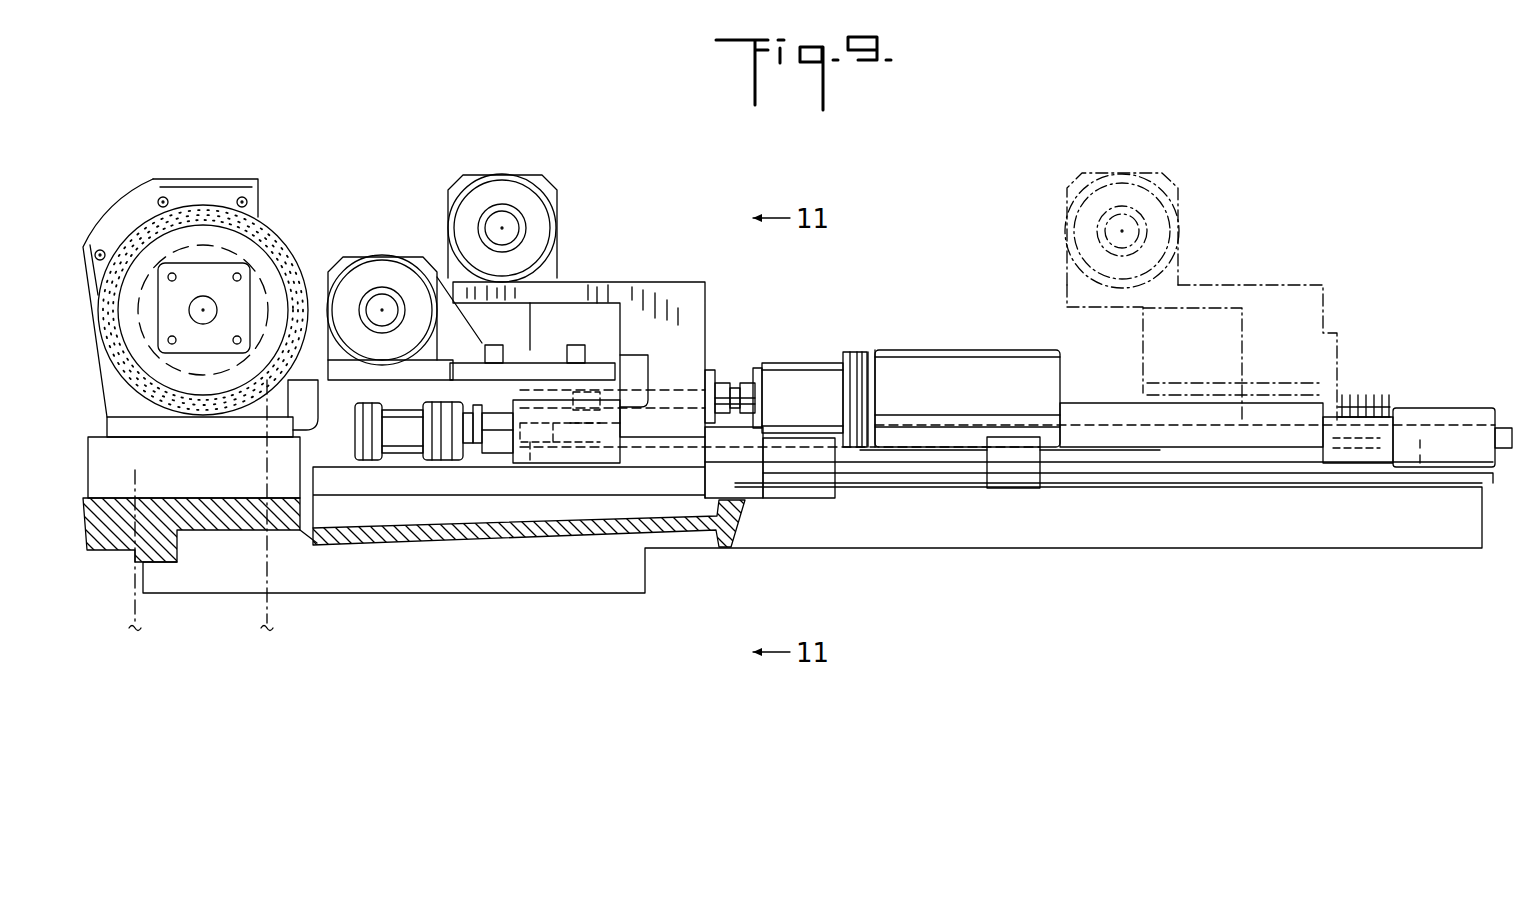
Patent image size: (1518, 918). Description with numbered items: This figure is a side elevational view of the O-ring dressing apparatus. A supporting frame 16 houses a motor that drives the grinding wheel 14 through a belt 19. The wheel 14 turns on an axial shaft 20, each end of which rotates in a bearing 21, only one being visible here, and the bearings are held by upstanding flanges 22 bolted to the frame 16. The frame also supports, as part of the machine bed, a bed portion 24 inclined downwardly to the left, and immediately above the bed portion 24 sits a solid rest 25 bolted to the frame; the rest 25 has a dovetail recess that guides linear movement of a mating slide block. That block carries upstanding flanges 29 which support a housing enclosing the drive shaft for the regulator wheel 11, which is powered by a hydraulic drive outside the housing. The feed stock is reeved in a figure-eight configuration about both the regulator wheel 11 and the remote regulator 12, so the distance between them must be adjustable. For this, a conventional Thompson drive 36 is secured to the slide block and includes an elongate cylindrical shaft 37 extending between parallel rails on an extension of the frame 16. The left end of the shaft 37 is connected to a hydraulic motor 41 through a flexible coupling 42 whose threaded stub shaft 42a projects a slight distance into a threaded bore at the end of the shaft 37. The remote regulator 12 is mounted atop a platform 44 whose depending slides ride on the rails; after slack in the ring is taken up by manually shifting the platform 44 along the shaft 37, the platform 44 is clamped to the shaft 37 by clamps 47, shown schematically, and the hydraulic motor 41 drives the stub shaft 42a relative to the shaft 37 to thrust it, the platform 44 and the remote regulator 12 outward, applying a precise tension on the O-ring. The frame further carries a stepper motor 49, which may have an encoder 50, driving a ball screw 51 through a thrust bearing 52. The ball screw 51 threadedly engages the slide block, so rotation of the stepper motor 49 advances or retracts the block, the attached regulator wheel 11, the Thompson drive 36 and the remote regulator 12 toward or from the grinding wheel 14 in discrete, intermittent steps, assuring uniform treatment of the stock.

The regulator wheel 11 is at (368, 268).
The remote regulator 12 is at (555, 215).
The grinding wheel 14 is at (263, 237).
The supporting frame 16 is at (640, 595).
The belt 19 is at (267, 483).
The axial shaft 20 is at (203, 325).
The bearing 21 is at (208, 272).
The upstanding flange 22 is at (120, 390).
The bed portion 24 is at (518, 540).
The solid rest 25 is at (663, 480).
The upstanding flanges 29 is at (418, 257).
The Thompson drive 36 is at (1455, 399).
The cylindrical shaft 37 is at (1418, 477).
The hydraulic motor 41 is at (358, 447).
The flexible coupling 42 is at (500, 400).
The threaded stub shaft 42a is at (776, 442).
The platform 44 is at (600, 300).
The clamps 47 is at (1375, 387).
The stepper motor 49 is at (938, 355).
The encoder 50 is at (1023, 480).
The ball screw 51 is at (735, 383).
The thrust bearing 52 is at (820, 367).